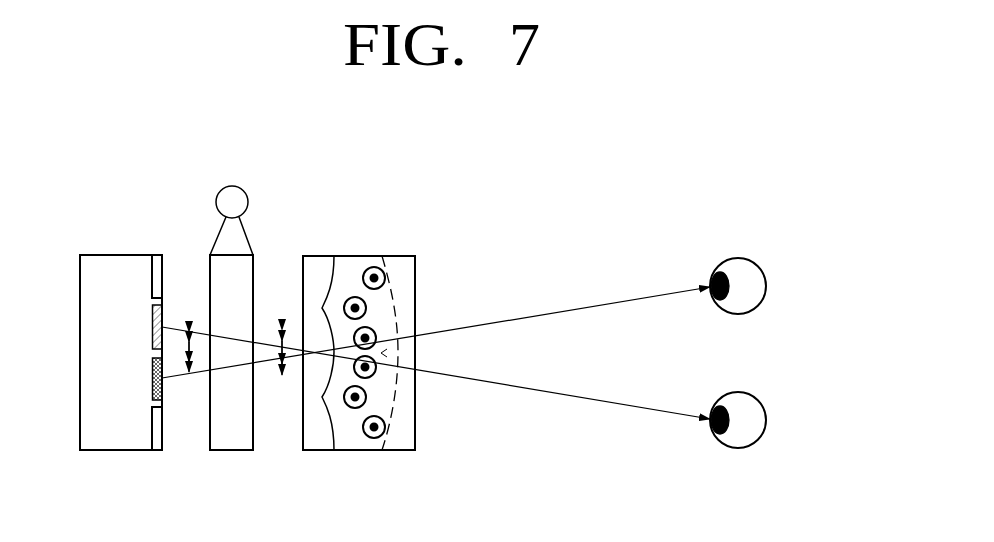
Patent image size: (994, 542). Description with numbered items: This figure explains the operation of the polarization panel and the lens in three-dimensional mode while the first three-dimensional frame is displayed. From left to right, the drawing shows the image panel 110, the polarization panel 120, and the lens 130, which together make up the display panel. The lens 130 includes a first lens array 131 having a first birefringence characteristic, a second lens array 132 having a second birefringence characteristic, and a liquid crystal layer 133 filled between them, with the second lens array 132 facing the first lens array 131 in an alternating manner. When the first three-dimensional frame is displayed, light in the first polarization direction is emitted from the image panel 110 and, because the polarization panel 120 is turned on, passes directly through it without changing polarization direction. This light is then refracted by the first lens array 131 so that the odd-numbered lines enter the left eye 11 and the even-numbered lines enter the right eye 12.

The image panel 110 is at (113, 450).
The polarization panel 120 is at (227, 450).
The lens 130 is at (400, 256).
The first lens array 131 is at (310, 450).
The second lens array 132 is at (400, 450).
The liquid crystal layer 133 is at (357, 450).
The left eye 11 is at (766, 421).
The right eye 12 is at (766, 287).